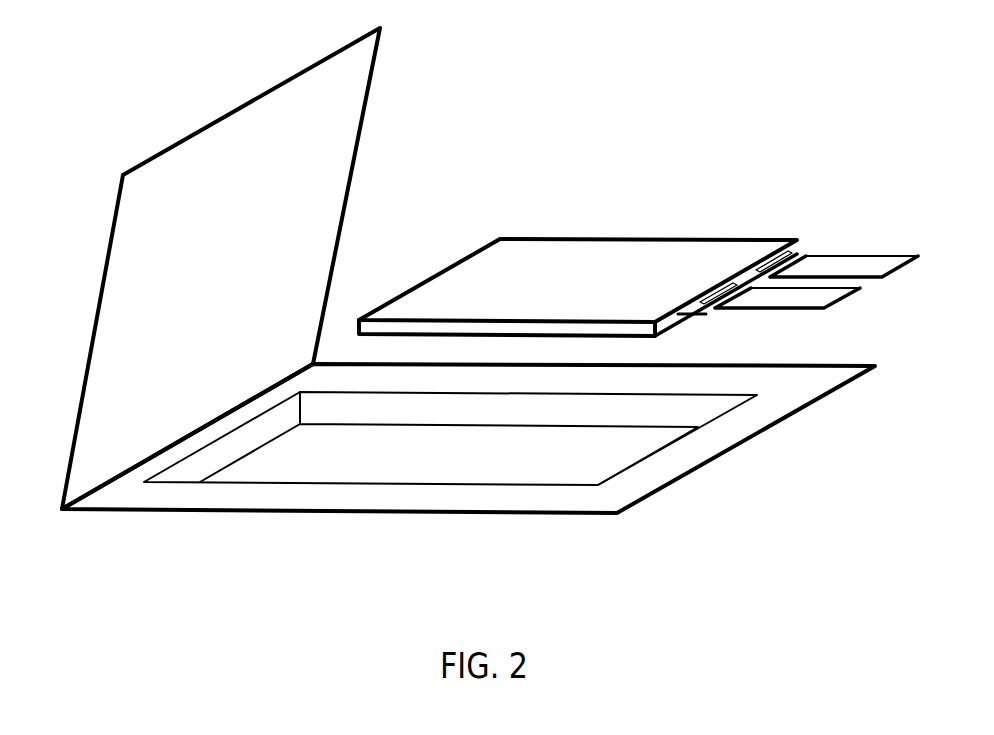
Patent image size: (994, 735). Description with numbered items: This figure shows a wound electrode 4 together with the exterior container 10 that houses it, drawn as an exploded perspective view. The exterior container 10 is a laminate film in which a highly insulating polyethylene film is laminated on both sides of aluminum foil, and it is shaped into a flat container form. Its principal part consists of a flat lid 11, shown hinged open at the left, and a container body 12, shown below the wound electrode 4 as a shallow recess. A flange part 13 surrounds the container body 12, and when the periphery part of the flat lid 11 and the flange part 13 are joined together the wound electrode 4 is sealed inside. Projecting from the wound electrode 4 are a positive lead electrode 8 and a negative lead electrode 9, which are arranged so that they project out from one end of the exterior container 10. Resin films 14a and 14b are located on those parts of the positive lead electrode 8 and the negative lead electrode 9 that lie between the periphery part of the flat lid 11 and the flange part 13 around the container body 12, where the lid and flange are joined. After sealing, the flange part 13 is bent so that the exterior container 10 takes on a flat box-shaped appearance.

The exterior container 10 is at (448, 290).
The flat lid 11 is at (277, 112).
The container body 12 is at (462, 475).
The flange part 13 is at (468, 462).
The wound electrode 4 is at (638, 250).
The resin film 14a is at (770, 265).
The resin film 14b is at (731, 292).
The positive lead electrode 8 is at (848, 267).
The negative lead electrode 9 is at (837, 295).